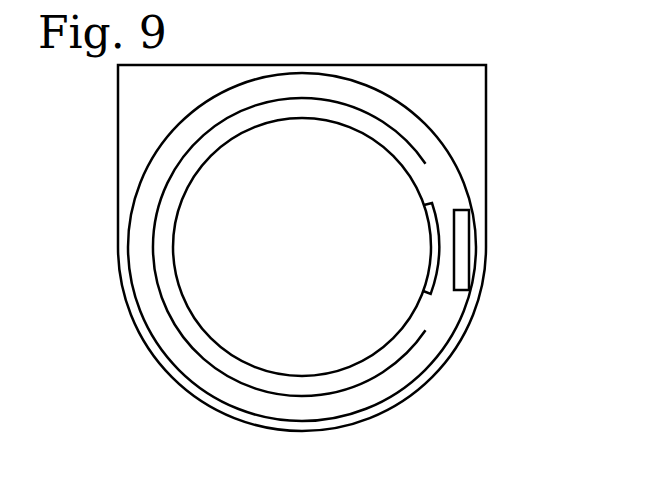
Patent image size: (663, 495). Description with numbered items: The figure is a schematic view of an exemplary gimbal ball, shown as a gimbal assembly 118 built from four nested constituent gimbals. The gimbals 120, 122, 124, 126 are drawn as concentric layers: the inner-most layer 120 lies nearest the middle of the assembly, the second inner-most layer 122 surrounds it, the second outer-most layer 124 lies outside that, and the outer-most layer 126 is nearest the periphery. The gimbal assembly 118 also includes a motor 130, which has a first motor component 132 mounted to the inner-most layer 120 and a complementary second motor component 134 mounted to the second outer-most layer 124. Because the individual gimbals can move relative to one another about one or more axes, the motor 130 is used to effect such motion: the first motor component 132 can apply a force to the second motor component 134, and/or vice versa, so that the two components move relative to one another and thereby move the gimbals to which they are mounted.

The gimbal assembly 118 is at (371, 264).
The inner-most layer gimbal 120 is at (402, 345).
The second inner-most layer gimbal 122 is at (338, 396).
The second outer-most layer gimbal 124 is at (301, 421).
The outer-most layer gimbal 126 is at (284, 432).
The motor 130 is at (494, 244).
The first motor component 132 is at (428, 293).
The second motor component 134 is at (470, 247).